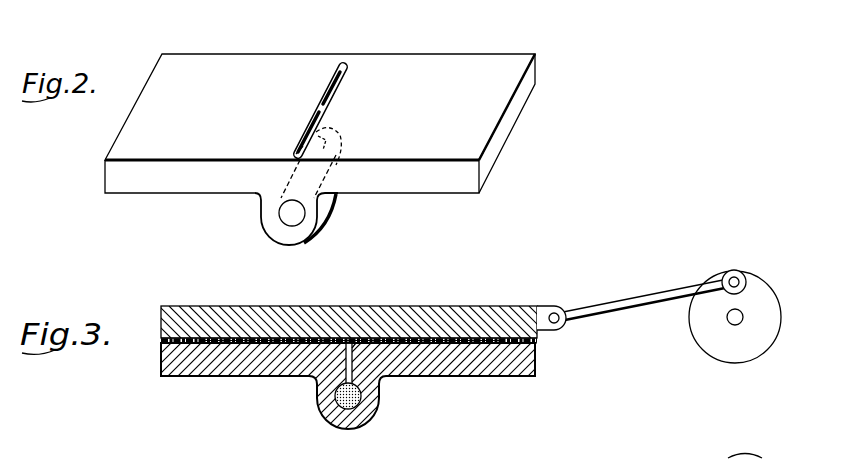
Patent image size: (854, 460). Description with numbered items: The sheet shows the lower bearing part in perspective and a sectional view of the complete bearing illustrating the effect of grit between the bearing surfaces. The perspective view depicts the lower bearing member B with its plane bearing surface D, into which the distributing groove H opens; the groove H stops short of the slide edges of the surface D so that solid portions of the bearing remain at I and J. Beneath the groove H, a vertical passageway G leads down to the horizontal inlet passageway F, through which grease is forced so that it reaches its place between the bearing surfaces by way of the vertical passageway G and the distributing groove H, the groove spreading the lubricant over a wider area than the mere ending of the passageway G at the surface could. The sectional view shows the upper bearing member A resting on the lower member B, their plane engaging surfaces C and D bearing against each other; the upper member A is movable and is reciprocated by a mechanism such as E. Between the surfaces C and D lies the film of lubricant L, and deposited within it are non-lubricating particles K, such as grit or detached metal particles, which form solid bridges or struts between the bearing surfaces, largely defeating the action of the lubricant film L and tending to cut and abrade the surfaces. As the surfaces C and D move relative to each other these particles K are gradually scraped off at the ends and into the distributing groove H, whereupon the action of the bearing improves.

In FIG. 3, the upper bearing member A is at (213, 316).
In FIG. 2, the lower bearing member B is at (428, 183).
In FIG. 3, the lower bearing member B is at (206, 372).
In FIG. 3, the plane engaging surface of upper member C is at (161, 341).
In FIG. 2, the plane bearing surface of lower member D is at (478, 73).
In FIG. 3, the plane bearing surface of lower member D is at (160, 346).
In FIG. 3, the reciprocating mechanism E is at (733, 270).
In FIG. 2, the inlet passageway F is at (291, 215).
In FIG. 3, the inlet passageway F is at (343, 404).
In FIG. 2, the vertical passageway G is at (336, 129).
In FIG. 3, the vertical passageway G is at (353, 377).
In FIG. 2, the distributing groove H is at (330, 72).
In FIG. 2, the solid portion of bearing I is at (347, 62).
In FIG. 2, the solid portion of bearing J is at (300, 155).
In FIG. 3, the non-lubricating particles K is at (323, 342).
In FIG. 3, the film of lubricant L is at (262, 338).